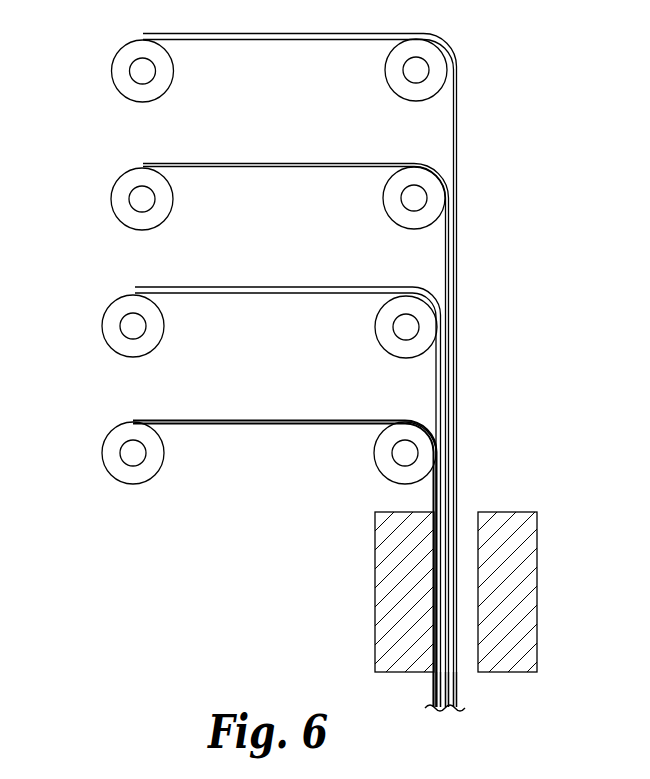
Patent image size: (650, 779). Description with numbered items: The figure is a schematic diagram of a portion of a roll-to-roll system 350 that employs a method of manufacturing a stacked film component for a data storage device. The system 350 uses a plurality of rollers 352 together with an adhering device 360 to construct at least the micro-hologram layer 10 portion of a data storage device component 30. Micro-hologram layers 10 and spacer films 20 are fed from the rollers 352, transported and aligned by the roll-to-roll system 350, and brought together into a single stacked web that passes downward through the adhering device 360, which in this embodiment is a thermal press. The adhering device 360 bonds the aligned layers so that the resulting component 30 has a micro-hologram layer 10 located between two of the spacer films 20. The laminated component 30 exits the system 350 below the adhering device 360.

The system 350 is at (529, 96).
The rollers 352 is at (118, 73).
The spacer film 20 is at (258, 39).
The micro-hologram layer 10 is at (258, 167).
The adhering device 360 is at (552, 528).
The data storage device component 30 is at (476, 715).